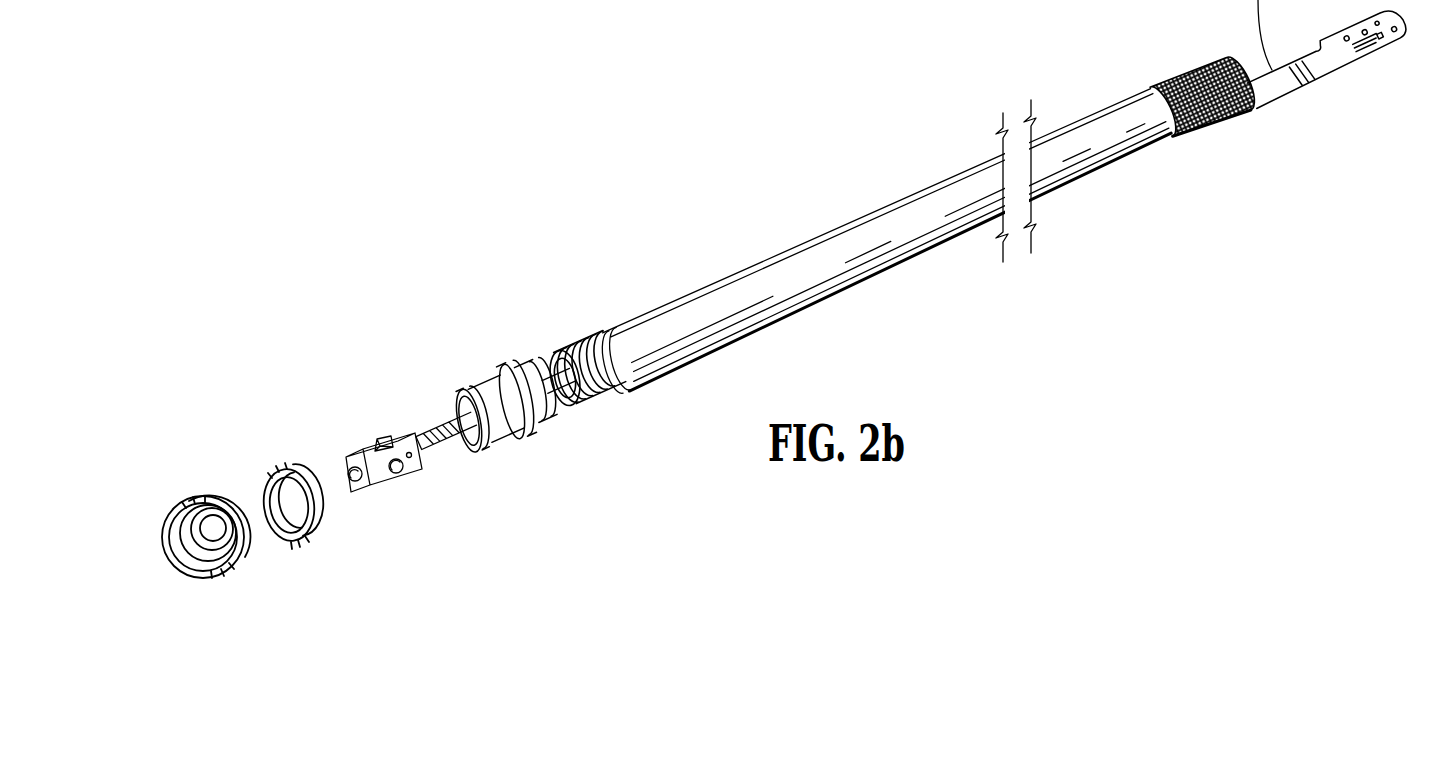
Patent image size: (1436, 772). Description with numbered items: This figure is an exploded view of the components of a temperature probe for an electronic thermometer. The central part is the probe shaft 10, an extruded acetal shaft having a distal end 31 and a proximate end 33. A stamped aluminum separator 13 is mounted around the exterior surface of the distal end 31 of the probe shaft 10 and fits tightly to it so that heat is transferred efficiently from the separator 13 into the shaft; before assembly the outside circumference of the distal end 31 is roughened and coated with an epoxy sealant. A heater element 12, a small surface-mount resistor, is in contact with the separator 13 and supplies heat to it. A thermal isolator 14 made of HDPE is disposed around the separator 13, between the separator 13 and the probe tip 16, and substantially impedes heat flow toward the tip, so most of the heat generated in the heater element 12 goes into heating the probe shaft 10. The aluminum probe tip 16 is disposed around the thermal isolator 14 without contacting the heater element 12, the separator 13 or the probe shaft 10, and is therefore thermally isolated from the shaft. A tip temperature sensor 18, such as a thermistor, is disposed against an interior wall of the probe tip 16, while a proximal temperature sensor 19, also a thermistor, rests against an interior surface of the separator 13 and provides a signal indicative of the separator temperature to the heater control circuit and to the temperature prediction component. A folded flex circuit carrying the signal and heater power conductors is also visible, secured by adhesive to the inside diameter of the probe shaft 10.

The probe shaft 10 is at (707, 297).
The heater element 12 is at (380, 441).
The separator 13 is at (513, 363).
The thermal isolator 14 is at (289, 466).
The probe tip 16 is at (193, 500).
The tip temperature sensor 18 is at (348, 486).
The proximal temperature sensor 19 is at (407, 478).
The distal end 31 is at (647, 382).
The proximate end 33 is at (1217, 133).